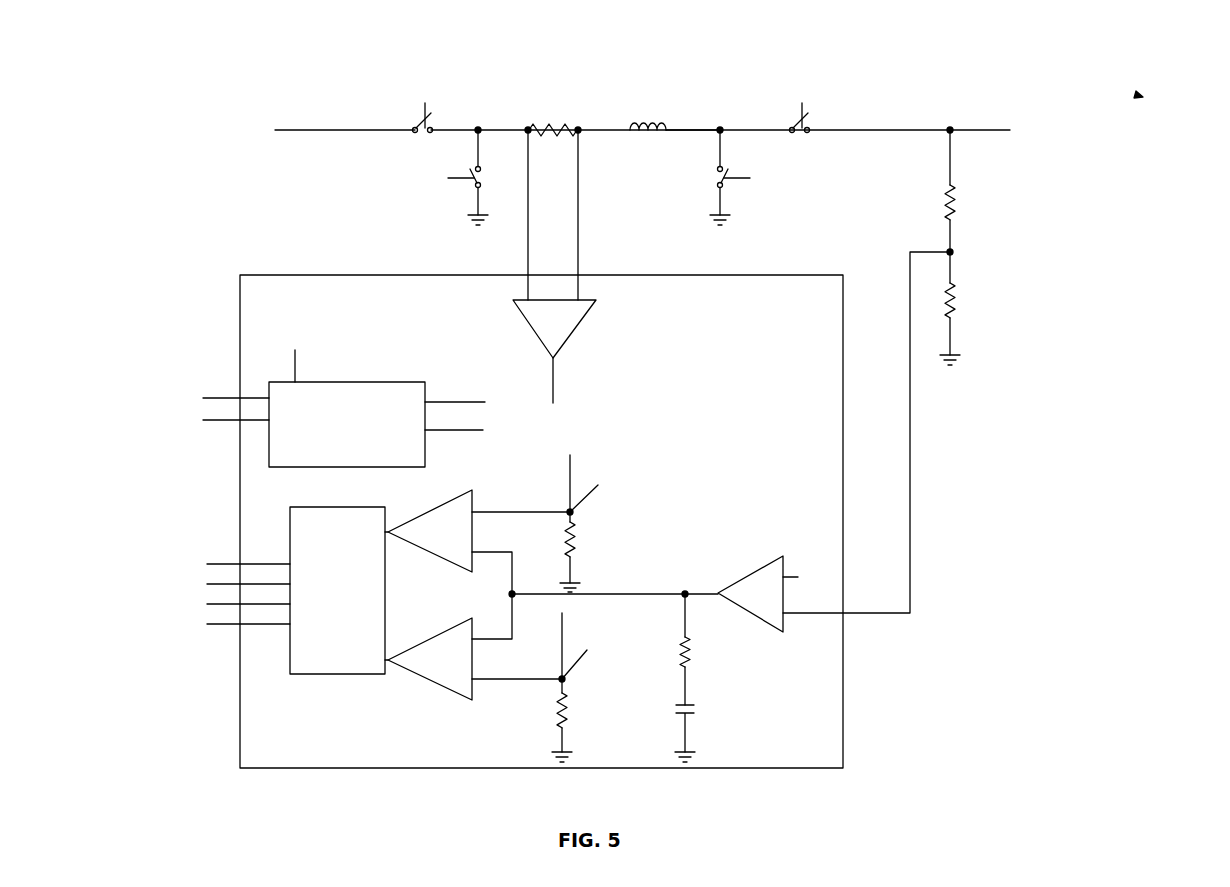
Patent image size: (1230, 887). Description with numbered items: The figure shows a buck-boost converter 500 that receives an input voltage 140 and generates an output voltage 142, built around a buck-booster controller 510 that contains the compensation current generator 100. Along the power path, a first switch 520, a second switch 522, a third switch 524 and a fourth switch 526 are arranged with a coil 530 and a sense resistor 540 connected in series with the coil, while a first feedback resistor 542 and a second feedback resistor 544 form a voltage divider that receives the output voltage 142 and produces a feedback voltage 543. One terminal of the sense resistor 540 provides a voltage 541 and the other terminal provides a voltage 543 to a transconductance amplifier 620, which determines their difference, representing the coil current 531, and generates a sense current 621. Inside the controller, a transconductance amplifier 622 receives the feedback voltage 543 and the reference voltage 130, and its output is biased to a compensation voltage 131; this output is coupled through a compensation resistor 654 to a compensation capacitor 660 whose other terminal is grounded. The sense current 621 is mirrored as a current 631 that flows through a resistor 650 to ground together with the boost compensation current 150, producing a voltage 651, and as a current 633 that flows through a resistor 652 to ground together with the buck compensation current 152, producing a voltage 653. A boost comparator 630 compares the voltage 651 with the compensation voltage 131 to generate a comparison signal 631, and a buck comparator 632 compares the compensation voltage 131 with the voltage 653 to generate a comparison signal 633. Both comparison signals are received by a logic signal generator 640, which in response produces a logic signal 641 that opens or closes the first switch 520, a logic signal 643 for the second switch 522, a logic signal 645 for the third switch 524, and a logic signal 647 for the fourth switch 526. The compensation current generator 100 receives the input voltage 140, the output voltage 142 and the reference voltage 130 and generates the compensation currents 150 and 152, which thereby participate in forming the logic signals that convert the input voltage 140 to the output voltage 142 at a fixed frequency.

The buck-boost converter 500 is at (1134, 98).
The input voltage 140 is at (302, 124).
The output voltage 142 is at (953, 125).
The switch 520 is at (418, 138).
The switch 522 is at (482, 182).
The switch 524 is at (715, 170).
The switch 526 is at (791, 138).
The logic signal 641 is at (418, 112).
The logic signal 643 is at (448, 178).
The logic signal 645 is at (753, 178).
The logic signal 647 is at (800, 121).
The resistor 540 is at (556, 134).
The voltage 541 is at (528, 244).
The voltage 543 is at (578, 210).
The coil 530 is at (658, 136).
The coil current 531 is at (680, 116).
The resistor 542 is at (945, 212).
The resistor 544 is at (953, 288).
The buck-booster controller 510 is at (843, 738).
The transconductance amplifier 620 is at (584, 324).
The current 621 is at (560, 392).
The reference voltage 130 is at (295, 374).
The compensation current generator 100 is at (319, 468).
The compensation current 150 is at (485, 399).
The compensation current 152 is at (452, 432).
The logic signal generator 640 is at (319, 674).
The comparator 630 is at (430, 550).
The comparison signal 631 is at (386, 534).
The voltage 651 is at (501, 518).
The resistor 650 is at (576, 543).
The voltage 131 is at (684, 592).
The comparator 632 is at (444, 678).
The comparison signal 633 is at (386, 662).
The voltage 653 is at (503, 686).
The resistor 652 is at (564, 712).
The resistor 654 is at (694, 656).
The capacitor 660 is at (684, 718).
The transconductance amplifier 622 is at (756, 612).